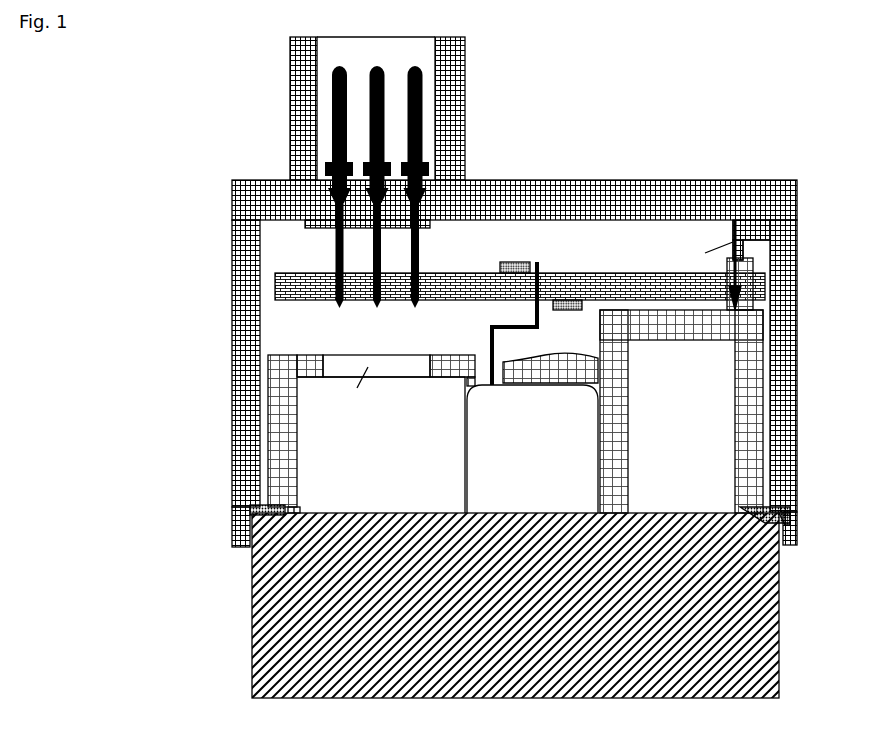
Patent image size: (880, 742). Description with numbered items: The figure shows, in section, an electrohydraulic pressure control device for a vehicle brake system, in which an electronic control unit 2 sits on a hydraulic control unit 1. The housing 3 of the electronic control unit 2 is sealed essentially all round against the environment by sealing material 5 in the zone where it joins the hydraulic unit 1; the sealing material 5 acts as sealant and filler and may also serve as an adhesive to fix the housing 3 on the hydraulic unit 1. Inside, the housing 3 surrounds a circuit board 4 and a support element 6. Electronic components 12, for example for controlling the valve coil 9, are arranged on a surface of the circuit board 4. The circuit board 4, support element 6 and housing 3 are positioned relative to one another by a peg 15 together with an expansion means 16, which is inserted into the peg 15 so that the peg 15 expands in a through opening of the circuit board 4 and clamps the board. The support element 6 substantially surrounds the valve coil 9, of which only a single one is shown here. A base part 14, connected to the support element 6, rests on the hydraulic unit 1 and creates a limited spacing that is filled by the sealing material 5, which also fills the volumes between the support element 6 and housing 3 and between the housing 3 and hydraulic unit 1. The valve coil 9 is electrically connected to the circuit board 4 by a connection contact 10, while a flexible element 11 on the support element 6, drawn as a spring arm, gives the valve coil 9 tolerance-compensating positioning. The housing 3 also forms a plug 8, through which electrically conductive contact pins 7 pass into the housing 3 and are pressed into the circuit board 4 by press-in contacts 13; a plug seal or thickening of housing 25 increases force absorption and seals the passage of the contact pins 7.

The hydraulic control unit 1 is at (767, 645).
The electronic control unit 2 is at (797, 228).
The housing 3 is at (757, 192).
The circuit board 4 is at (592, 282).
The sealing material 5 is at (827, 494).
The support element 6 is at (613, 458).
The contact pins 7 is at (420, 152).
The plug 8 is at (457, 110).
The valve coil 9 is at (500, 445).
The connection contact 10 is at (490, 332).
The flexible element 11 is at (520, 361).
The electronic components 12 is at (574, 322).
The press-in contact 13 is at (340, 307).
The base part 14 is at (818, 550).
The peg 15 is at (755, 302).
The expansion means 16 is at (768, 273).
The plug seal or thickening of housing 25 is at (320, 223).